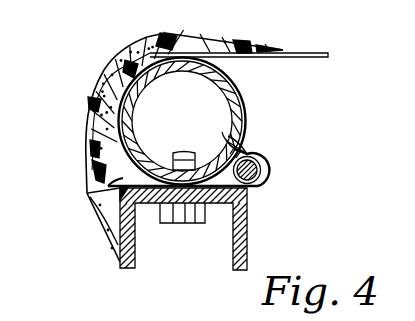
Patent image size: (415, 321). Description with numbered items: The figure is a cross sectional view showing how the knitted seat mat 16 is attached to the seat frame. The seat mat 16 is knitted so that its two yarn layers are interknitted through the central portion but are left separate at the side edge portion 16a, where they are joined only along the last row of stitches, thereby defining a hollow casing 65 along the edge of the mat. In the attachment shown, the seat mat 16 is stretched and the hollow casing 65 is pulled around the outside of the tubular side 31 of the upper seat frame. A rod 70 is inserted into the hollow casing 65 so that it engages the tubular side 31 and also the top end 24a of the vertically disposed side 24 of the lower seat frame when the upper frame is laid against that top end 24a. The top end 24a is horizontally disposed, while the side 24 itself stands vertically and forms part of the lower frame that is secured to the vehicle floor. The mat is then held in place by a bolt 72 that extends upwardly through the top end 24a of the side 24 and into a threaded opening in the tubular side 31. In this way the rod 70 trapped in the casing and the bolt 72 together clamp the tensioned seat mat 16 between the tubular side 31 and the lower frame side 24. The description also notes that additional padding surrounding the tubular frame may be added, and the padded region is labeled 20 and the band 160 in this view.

The bumper assembly 20 is at (100, 70).
The band 160 is at (127, 133).
The tubular side 31 is at (118, 137).
The rod 70 is at (245, 155).
The seat mat 16 is at (312, 60).
The side edge portion 16a is at (263, 160).
The hollow casing 65 is at (266, 168).
The top end 24a is at (88, 193).
The side 24 is at (118, 266).
The bolt 72 is at (185, 220).